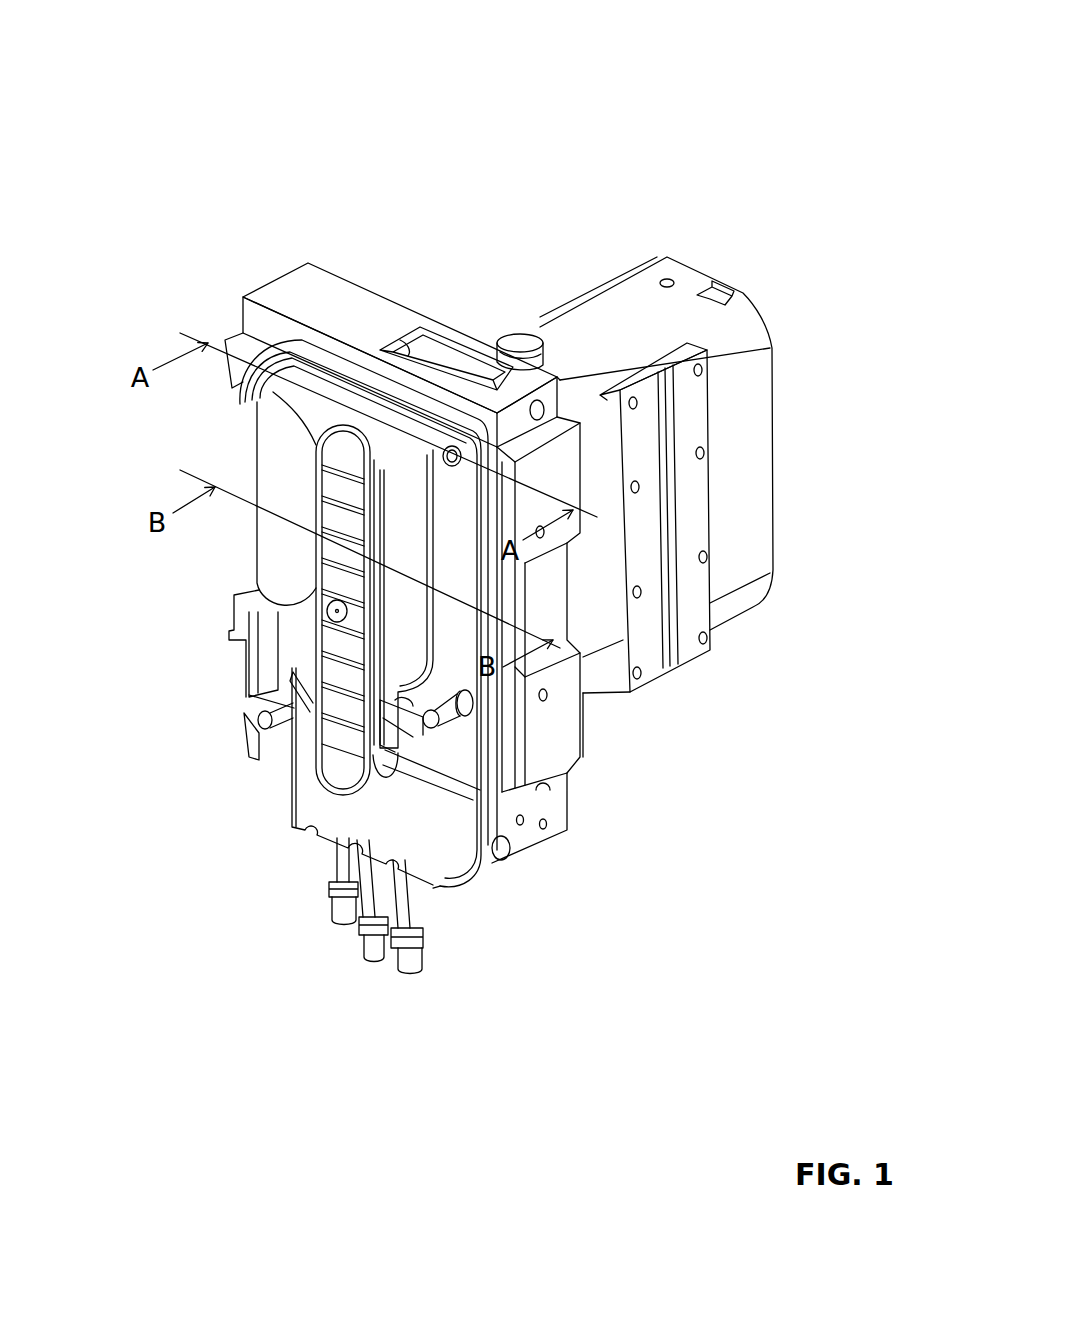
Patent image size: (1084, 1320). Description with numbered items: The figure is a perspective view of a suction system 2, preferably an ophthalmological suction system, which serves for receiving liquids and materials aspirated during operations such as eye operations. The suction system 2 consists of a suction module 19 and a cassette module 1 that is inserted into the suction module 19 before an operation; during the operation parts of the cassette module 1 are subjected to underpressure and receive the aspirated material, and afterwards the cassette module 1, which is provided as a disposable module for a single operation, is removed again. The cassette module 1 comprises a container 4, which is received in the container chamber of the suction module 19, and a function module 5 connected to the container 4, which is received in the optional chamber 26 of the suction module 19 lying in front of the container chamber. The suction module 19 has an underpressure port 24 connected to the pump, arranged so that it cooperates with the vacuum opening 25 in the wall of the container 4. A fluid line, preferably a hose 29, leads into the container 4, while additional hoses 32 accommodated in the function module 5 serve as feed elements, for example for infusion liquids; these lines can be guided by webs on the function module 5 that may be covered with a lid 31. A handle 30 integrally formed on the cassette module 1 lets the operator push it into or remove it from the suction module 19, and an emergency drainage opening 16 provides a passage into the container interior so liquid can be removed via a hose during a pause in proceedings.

The cassette module 1 is at (480, 703).
The suction system 2 is at (652, 160).
The container 4 is at (735, 568).
The function module 5 is at (443, 862).
The emergency drainage opening 16 is at (438, 730).
The suction module 19 is at (341, 310).
The underpressure port 24 is at (520, 330).
The vacuum opening 25 is at (555, 362).
The optional chamber 26 is at (302, 340).
The hose 29 is at (345, 930).
The handle 30 is at (338, 740).
The lid 31 is at (308, 790).
The additional hoses 32 is at (398, 967).